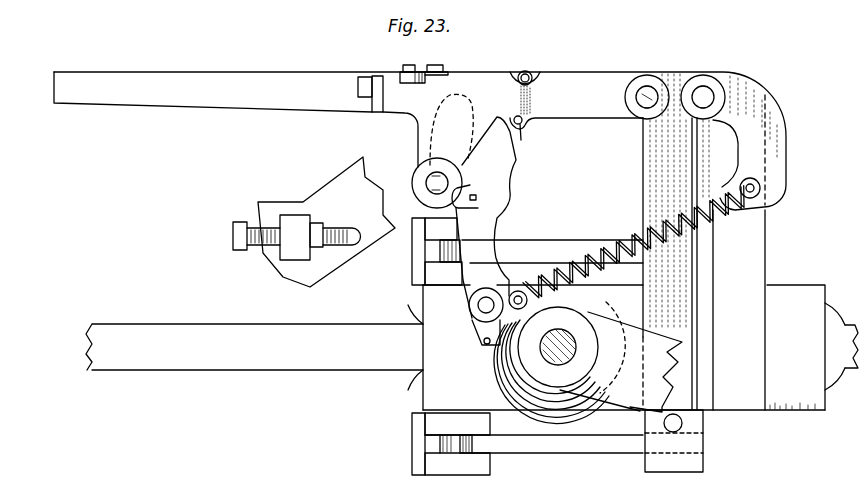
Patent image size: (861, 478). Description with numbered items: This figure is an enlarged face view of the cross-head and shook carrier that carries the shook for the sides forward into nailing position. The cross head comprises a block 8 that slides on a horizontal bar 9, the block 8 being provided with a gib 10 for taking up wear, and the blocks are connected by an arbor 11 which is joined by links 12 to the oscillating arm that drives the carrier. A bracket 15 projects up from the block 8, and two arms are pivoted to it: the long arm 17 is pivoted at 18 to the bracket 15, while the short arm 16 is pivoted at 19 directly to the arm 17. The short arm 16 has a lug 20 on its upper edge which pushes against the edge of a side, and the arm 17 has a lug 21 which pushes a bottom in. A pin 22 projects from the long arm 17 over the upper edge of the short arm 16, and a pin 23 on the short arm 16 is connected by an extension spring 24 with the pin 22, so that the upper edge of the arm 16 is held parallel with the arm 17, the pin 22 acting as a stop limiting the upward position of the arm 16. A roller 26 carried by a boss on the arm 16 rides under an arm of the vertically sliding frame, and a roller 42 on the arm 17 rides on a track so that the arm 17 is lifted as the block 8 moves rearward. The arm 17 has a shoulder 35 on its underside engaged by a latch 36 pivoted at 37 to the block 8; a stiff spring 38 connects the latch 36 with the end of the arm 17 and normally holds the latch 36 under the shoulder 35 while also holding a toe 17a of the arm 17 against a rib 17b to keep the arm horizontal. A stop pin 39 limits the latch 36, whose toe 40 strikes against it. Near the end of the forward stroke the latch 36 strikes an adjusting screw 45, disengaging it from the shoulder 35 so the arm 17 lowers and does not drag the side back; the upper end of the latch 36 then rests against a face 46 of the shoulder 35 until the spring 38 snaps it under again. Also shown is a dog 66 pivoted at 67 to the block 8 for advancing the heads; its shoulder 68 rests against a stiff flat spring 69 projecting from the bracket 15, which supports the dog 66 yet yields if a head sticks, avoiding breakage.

The block 8 is at (533, 347).
The horizontal bar 9 is at (254, 347).
The gib 10 is at (832, 300).
The arbor 11 is at (556, 347).
The link 12 is at (621, 357).
The bracket 15 is at (660, 150).
The short arm 16 is at (466, 125).
The long arm 17 is at (690, 55).
The toe 17a is at (716, 160).
The rib 17b is at (708, 335).
The pivot 18 is at (705, 92).
The pivot 19 is at (651, 75).
The lug 20 is at (418, 66).
The lug 21 is at (440, 66).
The pin 22 is at (530, 73).
The pin 23 is at (530, 136).
The extension spring 24 is at (532, 100).
The roller 26 is at (416, 176).
The shoulder 35 is at (458, 143).
The latch 36 is at (484, 217).
The pivot 37 is at (478, 305).
The spring 38 is at (616, 236).
The stop pin 39 is at (481, 346).
The toe 40 is at (476, 334).
The roller 42 is at (470, 100).
The adjusting screw 45 is at (335, 228).
The face 46 is at (484, 138).
The dog 66 is at (420, 258).
The pivot 67 is at (430, 270).
The shoulder 68 is at (490, 460).
The flat spring 69 is at (557, 248).